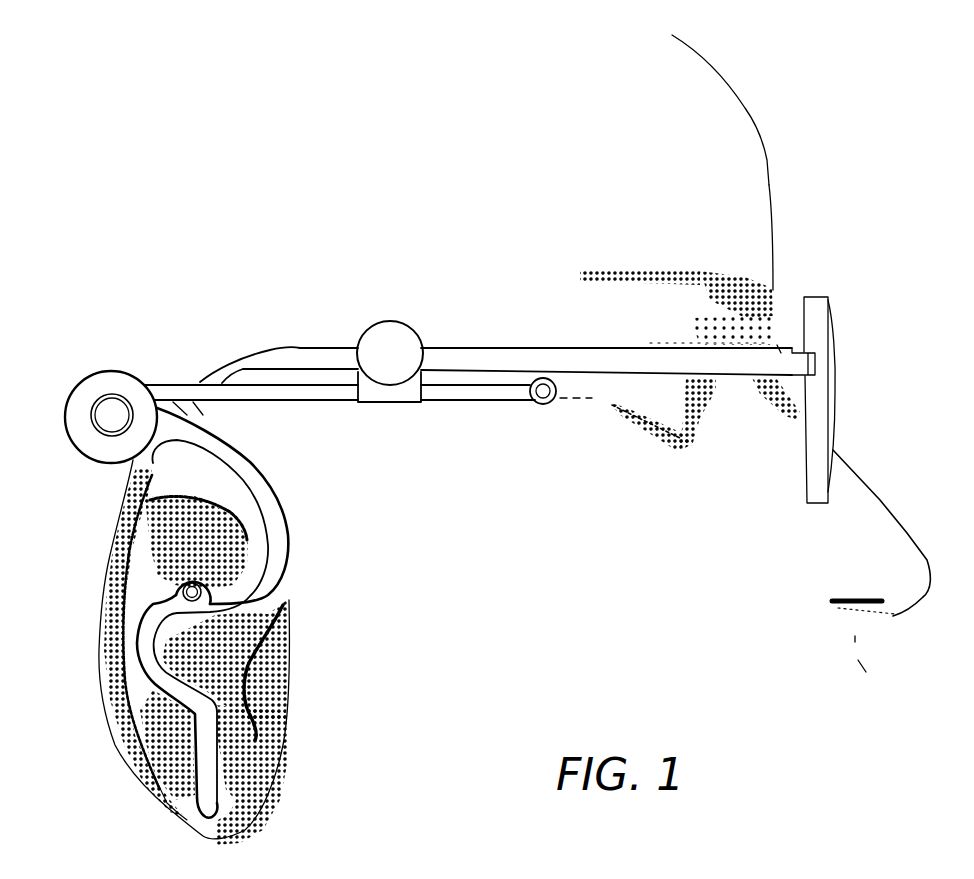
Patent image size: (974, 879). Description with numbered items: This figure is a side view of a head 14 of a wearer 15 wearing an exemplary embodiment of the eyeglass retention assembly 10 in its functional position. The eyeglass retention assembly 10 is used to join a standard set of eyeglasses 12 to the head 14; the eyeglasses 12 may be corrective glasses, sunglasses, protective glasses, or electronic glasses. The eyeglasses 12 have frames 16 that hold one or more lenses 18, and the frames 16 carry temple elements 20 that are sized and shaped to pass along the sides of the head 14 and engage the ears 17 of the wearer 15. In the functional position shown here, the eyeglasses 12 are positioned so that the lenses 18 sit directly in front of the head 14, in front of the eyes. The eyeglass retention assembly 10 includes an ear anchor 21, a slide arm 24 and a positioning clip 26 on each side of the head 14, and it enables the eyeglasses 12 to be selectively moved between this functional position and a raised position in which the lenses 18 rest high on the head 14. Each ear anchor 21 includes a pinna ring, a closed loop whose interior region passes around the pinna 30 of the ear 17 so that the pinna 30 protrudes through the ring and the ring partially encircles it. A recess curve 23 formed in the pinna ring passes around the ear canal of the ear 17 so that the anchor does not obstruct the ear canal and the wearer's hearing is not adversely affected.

The eyeglass retention assembly 10 is at (234, 292).
The eyeglasses 12 is at (803, 460).
The head 14 is at (693, 125).
The wearer 15 is at (773, 183).
The frames 16 is at (815, 332).
The ear 17 is at (103, 558).
The lenses 18 is at (836, 385).
The temple elements 20 is at (567, 360).
The ear anchor 21 is at (253, 462).
The recess curve 23 is at (150, 643).
The slide arm 24 is at (448, 395).
The positioning clip 26 is at (392, 342).
The pinna 30 is at (162, 725).